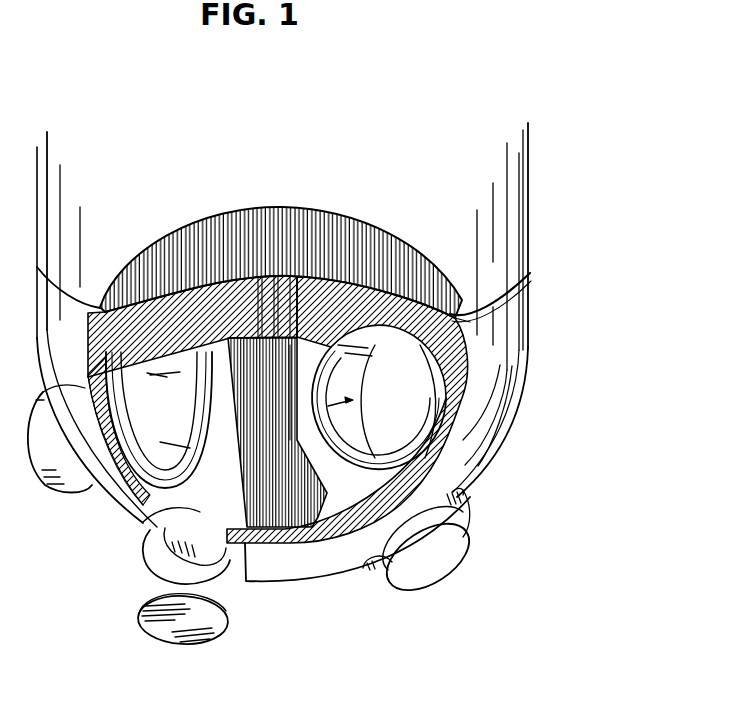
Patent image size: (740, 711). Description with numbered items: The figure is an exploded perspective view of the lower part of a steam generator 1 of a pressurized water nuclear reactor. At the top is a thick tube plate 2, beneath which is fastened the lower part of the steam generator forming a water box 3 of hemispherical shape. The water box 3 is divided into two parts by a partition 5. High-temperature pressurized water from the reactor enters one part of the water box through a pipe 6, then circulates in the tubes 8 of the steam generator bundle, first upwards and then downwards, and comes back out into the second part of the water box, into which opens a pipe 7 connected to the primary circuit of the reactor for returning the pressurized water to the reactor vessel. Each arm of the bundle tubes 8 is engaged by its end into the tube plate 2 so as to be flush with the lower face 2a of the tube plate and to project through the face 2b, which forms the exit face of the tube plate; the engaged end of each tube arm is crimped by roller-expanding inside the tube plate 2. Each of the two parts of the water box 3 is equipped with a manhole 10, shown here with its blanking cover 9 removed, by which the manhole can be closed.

The steam generator 1 is at (538, 297).
The tube plate 2 is at (522, 319).
The lower face of the tube plate 2a is at (445, 352).
The exit face of the tube plate 2b is at (455, 322).
The water box 3 is at (503, 447).
The partition 5 is at (275, 546).
The pipe 6 is at (58, 462).
The pipe 7 is at (363, 448).
The tubes 8 is at (186, 255).
The blanking cover 9 is at (432, 563).
The manhole 10 is at (157, 558).